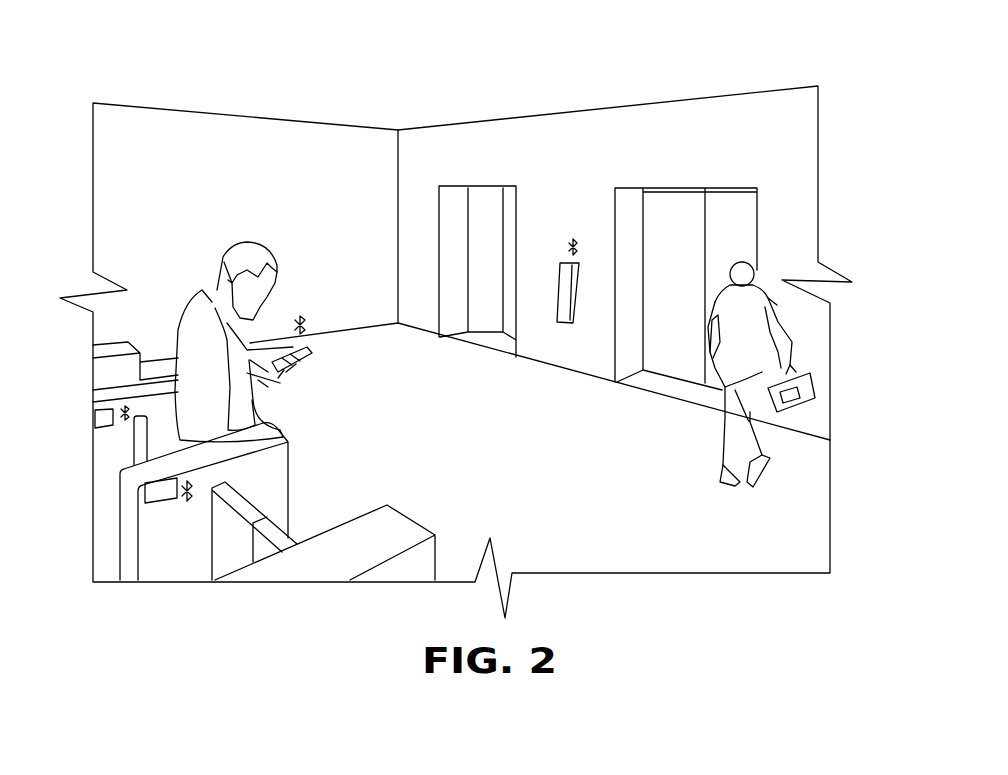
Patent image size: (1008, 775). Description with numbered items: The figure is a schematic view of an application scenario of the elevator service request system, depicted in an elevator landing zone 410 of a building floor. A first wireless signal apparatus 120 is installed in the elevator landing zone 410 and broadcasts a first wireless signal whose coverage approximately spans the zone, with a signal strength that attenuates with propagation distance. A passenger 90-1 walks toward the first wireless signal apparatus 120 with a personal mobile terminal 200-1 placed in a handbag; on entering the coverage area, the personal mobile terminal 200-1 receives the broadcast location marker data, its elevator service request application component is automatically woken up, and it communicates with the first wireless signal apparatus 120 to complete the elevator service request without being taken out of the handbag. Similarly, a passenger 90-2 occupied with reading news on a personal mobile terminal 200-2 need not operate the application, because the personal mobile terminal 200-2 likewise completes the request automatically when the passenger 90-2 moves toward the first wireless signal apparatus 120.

The elevator landing zone 410 is at (320, 112).
The passenger 90-2 is at (223, 253).
The personal mobile terminal 200-2 is at (312, 347).
The first wireless signal apparatus 120 is at (558, 328).
The passenger 90-1 is at (760, 280).
The personal mobile terminal 200-1 is at (793, 410).